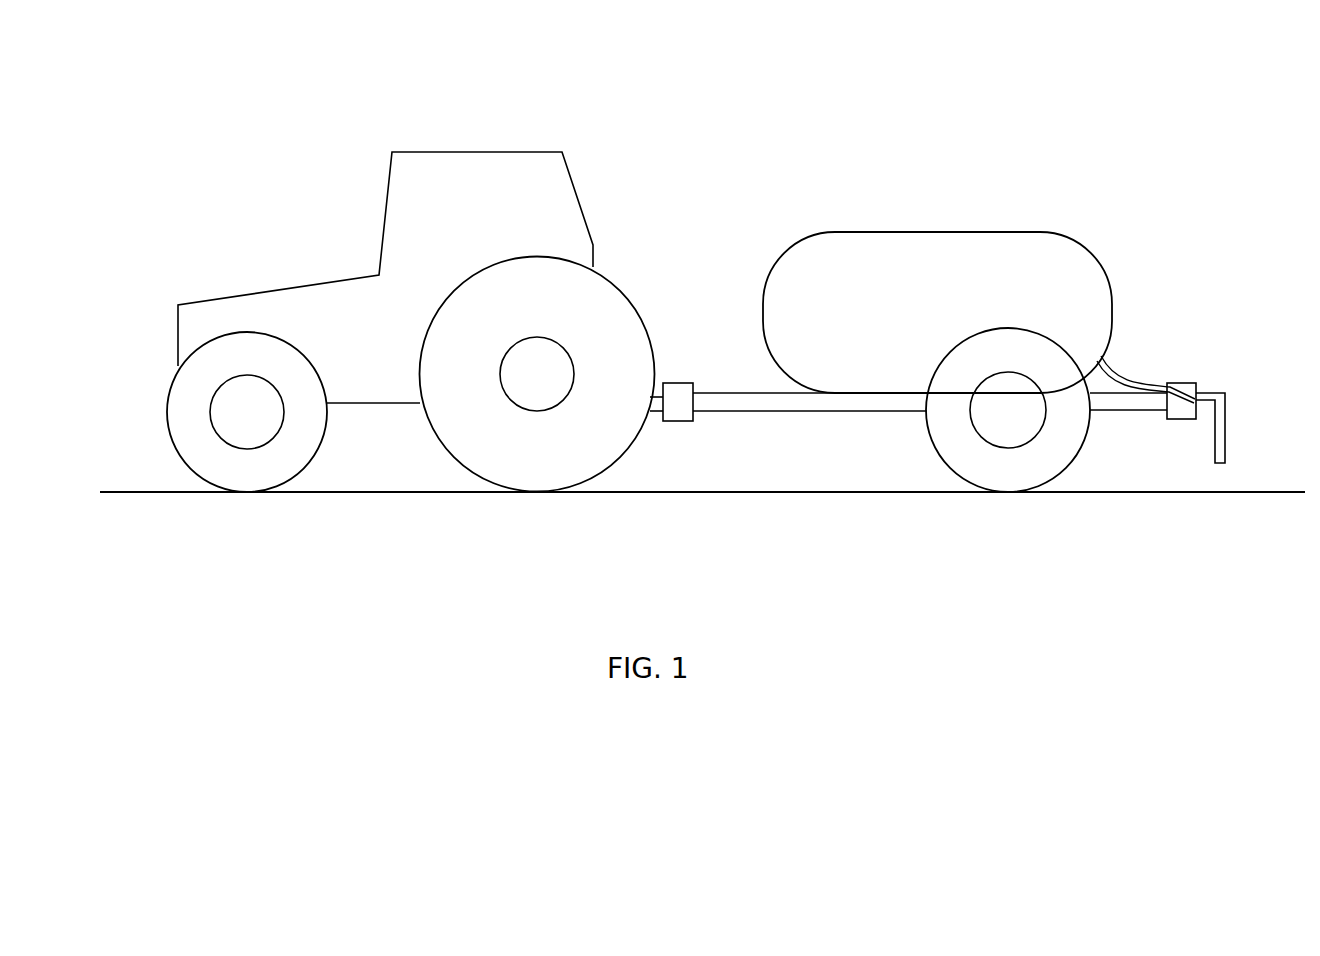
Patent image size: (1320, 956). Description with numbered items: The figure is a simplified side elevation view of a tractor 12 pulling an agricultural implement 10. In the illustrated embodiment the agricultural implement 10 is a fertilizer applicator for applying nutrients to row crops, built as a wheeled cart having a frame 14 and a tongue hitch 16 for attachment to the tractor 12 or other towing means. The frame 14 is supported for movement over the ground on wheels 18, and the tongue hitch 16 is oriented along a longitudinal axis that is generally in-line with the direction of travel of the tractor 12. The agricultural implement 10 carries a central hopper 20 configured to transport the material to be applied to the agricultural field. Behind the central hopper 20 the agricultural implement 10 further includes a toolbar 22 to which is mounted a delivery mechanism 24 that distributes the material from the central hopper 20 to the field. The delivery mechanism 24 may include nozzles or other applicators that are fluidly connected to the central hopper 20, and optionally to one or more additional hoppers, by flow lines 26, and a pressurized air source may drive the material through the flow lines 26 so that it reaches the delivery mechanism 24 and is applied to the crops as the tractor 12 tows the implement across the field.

The agricultural implement 10 is at (812, 192).
The tractor 12 is at (375, 210).
The frame 14 is at (873, 411).
The tongue hitch 16 is at (688, 421).
The wheels 18 is at (1043, 490).
The central hopper 20 is at (987, 232).
The toolbar 22 is at (1186, 383).
The delivery mechanism 24 is at (1222, 393).
The flow lines 26 is at (1128, 373).